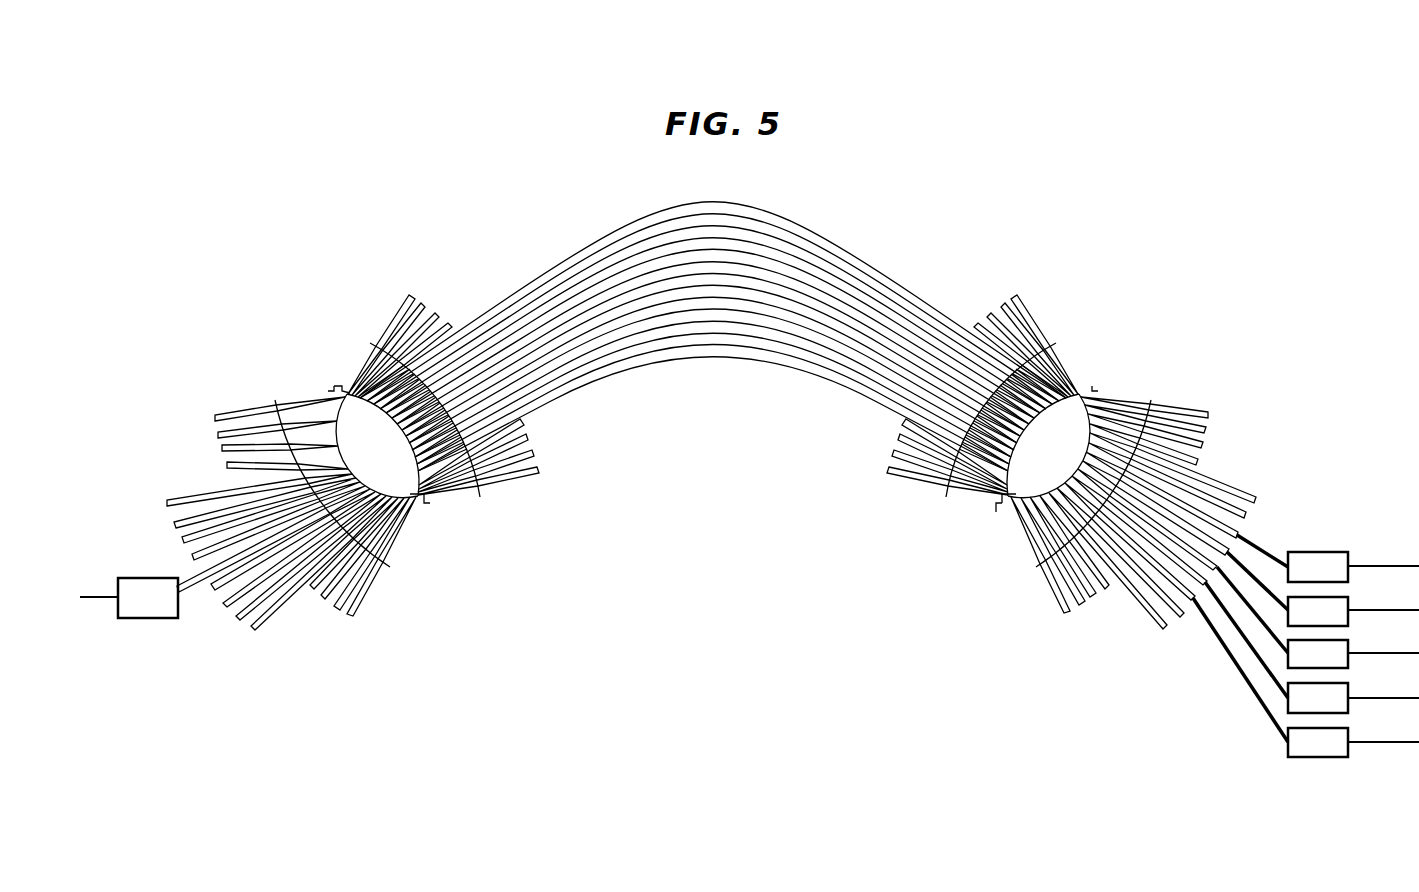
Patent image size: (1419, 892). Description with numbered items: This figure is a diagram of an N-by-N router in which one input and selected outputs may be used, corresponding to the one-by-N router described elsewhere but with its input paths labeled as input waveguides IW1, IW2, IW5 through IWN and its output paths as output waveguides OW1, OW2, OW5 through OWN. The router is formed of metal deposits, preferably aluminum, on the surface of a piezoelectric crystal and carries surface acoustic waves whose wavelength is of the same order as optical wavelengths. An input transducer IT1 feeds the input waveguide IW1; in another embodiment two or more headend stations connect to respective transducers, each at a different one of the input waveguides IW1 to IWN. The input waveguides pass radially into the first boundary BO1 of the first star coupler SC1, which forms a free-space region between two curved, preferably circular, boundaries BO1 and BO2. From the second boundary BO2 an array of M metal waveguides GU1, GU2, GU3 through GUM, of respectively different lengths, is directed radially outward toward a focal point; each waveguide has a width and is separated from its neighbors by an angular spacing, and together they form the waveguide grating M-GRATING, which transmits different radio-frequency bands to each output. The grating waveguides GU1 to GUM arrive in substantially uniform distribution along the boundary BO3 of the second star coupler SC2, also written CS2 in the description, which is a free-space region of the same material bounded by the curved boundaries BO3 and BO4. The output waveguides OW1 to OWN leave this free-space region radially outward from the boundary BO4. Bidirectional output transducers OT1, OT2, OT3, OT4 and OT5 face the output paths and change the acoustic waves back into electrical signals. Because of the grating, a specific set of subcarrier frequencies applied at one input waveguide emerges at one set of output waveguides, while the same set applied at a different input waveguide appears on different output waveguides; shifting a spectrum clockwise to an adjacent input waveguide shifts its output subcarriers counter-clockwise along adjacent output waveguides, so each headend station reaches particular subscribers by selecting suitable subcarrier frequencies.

The metal waveguide GU1 is at (556, 255).
The metal waveguide GU2 is at (622, 243).
The metal waveguide GU3 is at (677, 258).
The metal waveguide GUM is at (670, 353).
The waveguide grating M-GRATING is at (885, 402).
The boundary BO1 is at (330, 390).
The boundary BO2 is at (340, 388).
The boundary BO3 is at (998, 505).
The boundary BO4 is at (1096, 390).
The input waveguide IWN is at (214, 419).
The input waveguide IW1 is at (352, 618).
The input waveguide IW2 is at (339, 612).
The input waveguide IW5 is at (257, 632).
The input transducer IT1 is at (128, 578).
The star coupler SC1 is at (430, 503).
The star coupler SC2 is at (1080, 392).
The star coupler CS2 is at (1004, 515).
The output waveguide OW1 is at (1211, 417).
The output waveguide OW2 is at (1208, 431).
The output waveguide OW5 is at (1247, 500).
The output waveguide OWN is at (1068, 614).
The output transducer OT1 is at (1350, 559).
The output transducer OT2 is at (1350, 603).
The output transducer OT3 is at (1350, 646).
The output transducer OT4 is at (1350, 690).
The output transducer OT5 is at (1350, 734).